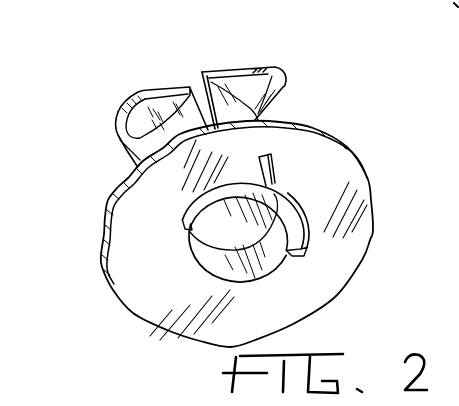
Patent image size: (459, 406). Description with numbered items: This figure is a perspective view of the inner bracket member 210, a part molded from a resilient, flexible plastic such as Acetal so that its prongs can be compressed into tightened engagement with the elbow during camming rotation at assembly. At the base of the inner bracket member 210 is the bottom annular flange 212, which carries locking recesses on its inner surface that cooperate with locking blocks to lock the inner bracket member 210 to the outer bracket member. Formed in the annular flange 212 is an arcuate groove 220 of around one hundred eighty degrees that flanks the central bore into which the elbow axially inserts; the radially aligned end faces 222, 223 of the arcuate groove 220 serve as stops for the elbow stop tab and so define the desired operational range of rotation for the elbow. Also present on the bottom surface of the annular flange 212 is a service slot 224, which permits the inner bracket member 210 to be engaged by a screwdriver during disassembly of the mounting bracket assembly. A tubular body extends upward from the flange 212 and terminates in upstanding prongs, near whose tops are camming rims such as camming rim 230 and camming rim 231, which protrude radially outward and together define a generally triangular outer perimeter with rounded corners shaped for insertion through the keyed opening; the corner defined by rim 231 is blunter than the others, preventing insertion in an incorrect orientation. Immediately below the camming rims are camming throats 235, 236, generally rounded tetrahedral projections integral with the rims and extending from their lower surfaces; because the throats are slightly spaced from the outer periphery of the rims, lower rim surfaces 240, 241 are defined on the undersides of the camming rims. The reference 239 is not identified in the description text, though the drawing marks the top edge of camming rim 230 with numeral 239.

The inner bracket member 210 is at (95, 77).
The bottom annular flange 212 is at (338, 170).
The arcuate groove 220 is at (300, 231).
The end face of arcuate groove 222 is at (300, 248).
The end face of arcuate groove 223 is at (186, 225).
The service slot 224 is at (286, 192).
The camming rim 230 is at (252, 66).
The camming rim 231 is at (160, 92).
The camming throat 235 is at (262, 105).
The camming throat 236 is at (127, 147).
The top edge 239 is at (272, 69).
The lower rim surface 240 is at (282, 88).
The lower rim surface 241 is at (133, 125).